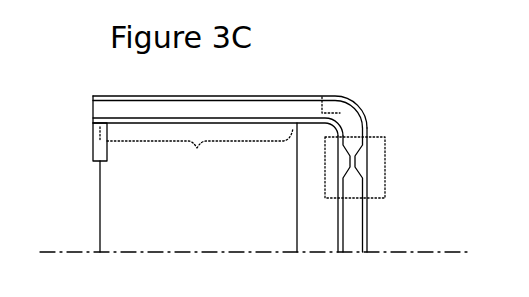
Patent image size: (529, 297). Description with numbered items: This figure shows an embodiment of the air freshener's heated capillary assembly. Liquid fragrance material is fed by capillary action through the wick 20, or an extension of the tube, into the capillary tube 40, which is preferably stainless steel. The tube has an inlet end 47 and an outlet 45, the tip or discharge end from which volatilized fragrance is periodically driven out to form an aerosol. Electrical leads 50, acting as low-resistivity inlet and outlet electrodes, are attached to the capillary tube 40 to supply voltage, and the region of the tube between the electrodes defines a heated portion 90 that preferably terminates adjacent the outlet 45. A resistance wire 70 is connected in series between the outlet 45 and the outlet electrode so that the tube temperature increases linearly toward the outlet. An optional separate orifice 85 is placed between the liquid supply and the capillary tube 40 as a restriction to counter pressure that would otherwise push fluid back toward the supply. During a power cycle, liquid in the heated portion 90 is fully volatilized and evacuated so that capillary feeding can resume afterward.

The wick 20 is at (368, 228).
The capillary tube 40 is at (248, 100).
The outlet 45 is at (93, 113).
The inlet end 47 is at (322, 113).
The electrical leads 50 is at (101, 208).
The resistance wire 70 is at (100, 141).
The orifice 85 is at (385, 163).
The heated portion 90 is at (200, 155).